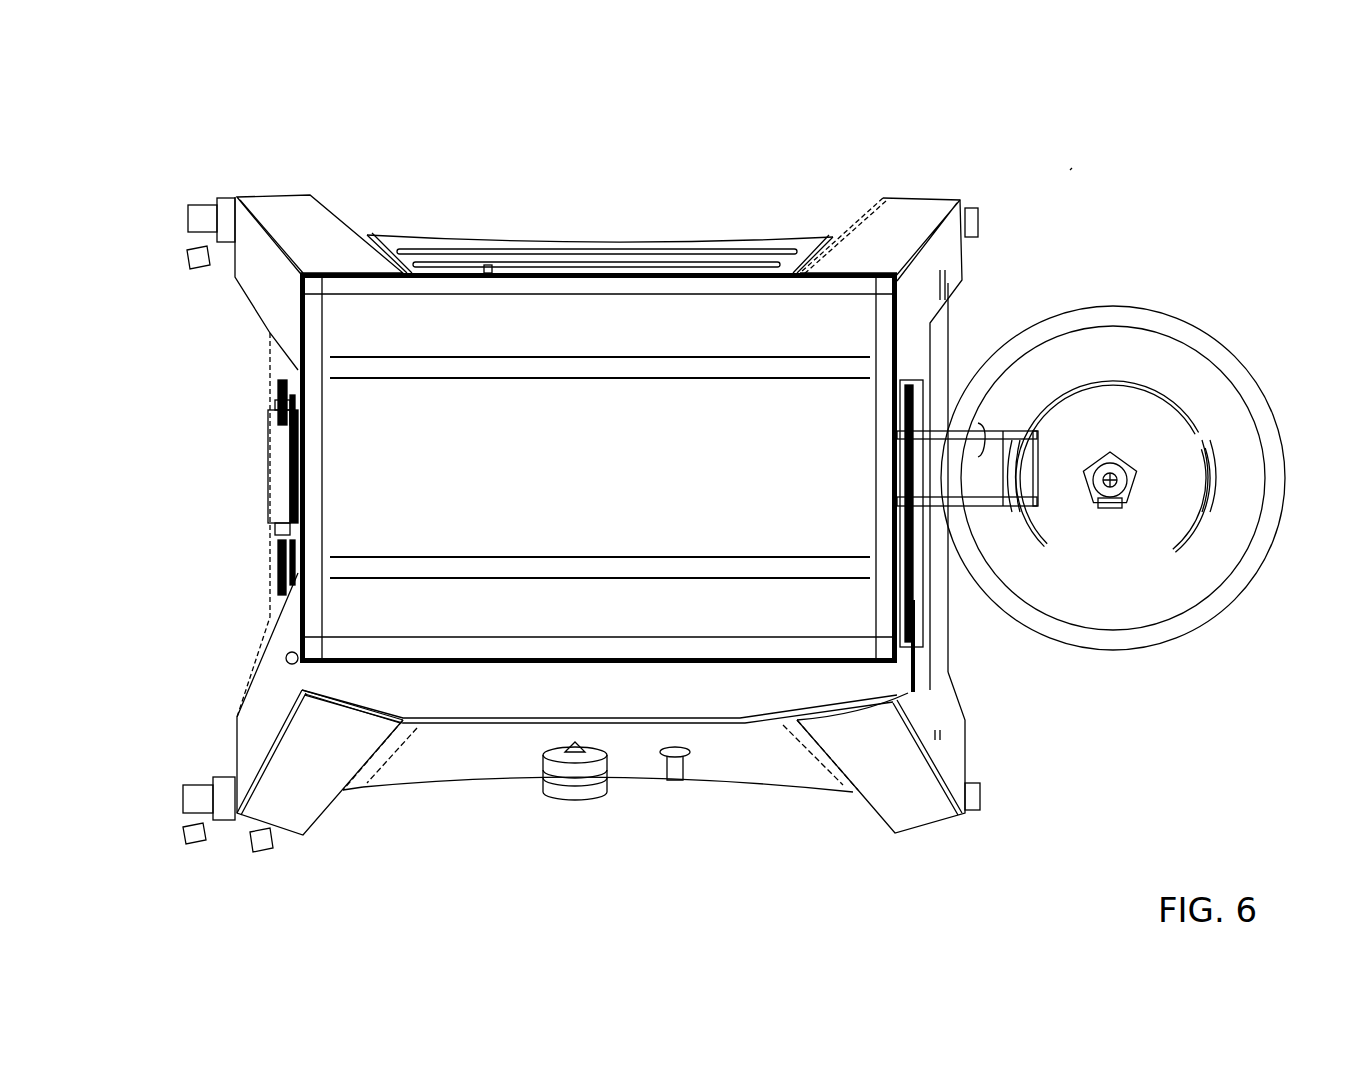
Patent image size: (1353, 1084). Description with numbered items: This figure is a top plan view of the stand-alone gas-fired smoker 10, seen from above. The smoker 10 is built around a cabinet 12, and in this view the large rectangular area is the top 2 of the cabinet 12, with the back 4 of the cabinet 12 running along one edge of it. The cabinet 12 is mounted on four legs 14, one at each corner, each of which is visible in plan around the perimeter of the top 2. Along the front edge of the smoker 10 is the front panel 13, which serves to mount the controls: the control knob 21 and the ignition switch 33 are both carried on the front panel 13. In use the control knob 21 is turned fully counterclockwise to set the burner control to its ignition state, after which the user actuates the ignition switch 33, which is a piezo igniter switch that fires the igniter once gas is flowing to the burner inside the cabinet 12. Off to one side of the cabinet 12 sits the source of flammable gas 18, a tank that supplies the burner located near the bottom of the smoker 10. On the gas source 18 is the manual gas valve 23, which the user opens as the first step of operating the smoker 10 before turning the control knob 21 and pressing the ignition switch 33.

The top 2 is at (420, 468).
The back 4 is at (430, 243).
The gas-fired smoker 10 is at (1070, 170).
The cabinet 12 is at (809, 218).
The front panel 13 is at (433, 760).
The legs 14 is at (304, 222).
The source of flammable gas 18 is at (1237, 340).
The control knob 21 is at (570, 800).
The manual gas valve 23 is at (1111, 455).
The ignition switch 33 is at (680, 777).